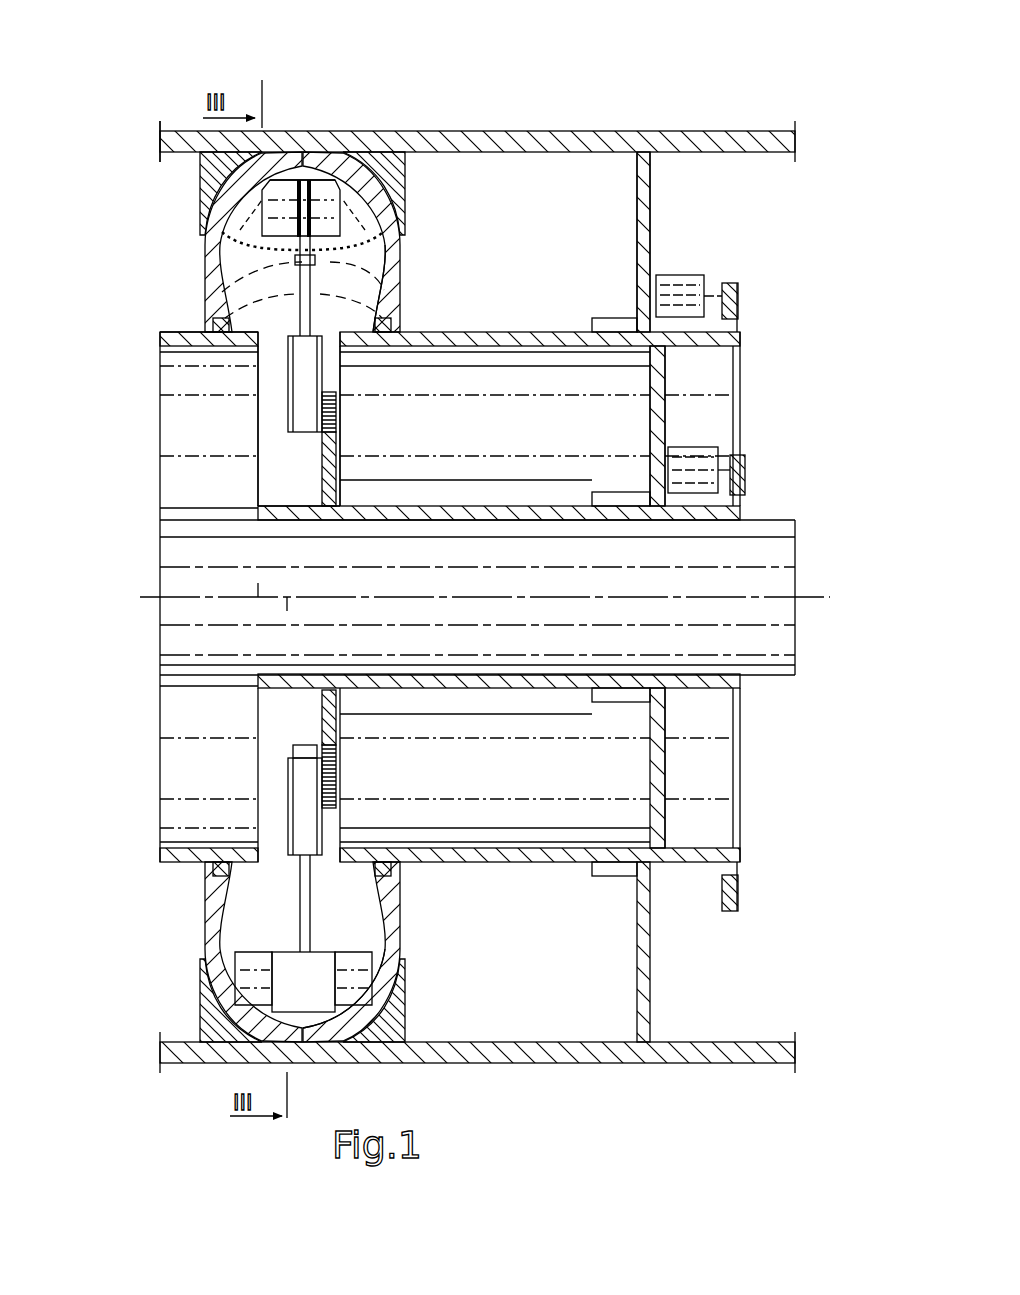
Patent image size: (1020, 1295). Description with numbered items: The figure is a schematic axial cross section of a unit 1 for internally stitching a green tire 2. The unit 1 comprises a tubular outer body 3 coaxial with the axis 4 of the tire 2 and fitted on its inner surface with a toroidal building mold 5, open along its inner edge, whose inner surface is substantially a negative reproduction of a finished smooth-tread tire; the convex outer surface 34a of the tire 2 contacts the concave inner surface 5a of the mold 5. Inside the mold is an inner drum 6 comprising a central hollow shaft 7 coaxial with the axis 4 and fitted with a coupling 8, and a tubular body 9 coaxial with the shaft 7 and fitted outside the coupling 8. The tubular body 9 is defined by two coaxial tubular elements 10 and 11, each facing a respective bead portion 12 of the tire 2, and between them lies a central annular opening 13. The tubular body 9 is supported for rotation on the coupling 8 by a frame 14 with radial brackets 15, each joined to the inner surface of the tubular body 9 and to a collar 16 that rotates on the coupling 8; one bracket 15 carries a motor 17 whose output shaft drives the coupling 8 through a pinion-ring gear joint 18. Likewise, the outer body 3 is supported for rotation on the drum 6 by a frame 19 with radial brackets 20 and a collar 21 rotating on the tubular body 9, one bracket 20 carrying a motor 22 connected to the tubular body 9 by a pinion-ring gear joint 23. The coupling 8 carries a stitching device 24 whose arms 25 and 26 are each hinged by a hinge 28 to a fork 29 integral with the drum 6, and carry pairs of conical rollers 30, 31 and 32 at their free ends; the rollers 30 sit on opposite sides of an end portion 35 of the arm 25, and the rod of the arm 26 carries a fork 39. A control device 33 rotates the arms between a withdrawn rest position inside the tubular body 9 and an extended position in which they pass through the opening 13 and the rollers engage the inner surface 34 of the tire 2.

The stitching unit 1 is at (398, 114).
The green tire 2 is at (345, 160).
The tubular outer body 3 is at (490, 133).
The axis 4 is at (800, 597).
The toroidal building mold 5 is at (200, 188).
The concave inner surface of mold 5a is at (408, 998).
The inner drum 6 is at (158, 403).
The central hollow shaft 7 is at (762, 568).
The coupling 8 is at (472, 508).
The tubular body 9 is at (490, 333).
The tubular element 10 is at (178, 330).
The tubular element 11 is at (534, 338).
The bead portion 12 is at (226, 338).
The annular opening 13 is at (345, 342).
The frame 14 is at (645, 430).
The radial bracket 15 is at (648, 408).
The collar 16 is at (612, 494).
The motor 17 is at (690, 460).
The pinion-ring gear joint 18 is at (754, 488).
The frame 19 is at (633, 238).
The radial bracket 20 is at (650, 187).
The collar 21 is at (614, 318).
The motor 22 is at (676, 290).
The pinion-ring gear joint 23 is at (740, 300).
The stitching device 24 is at (268, 282).
The arm 25 is at (380, 300).
The arm 26 is at (306, 940).
The hinge 28 is at (290, 432).
The fork 29 is at (292, 380).
The pair of conical rollers 30 is at (283, 165).
The pair of conical rollers 31 is at (250, 1036).
The pair of conical rollers 32 is at (380, 238).
The control device 33 is at (340, 480).
The inner surface of tire 34 is at (262, 205).
The convex outer surface of tire 34a is at (372, 1048).
The end portion of arm 35 is at (304, 195).
The fork 39 is at (290, 950).